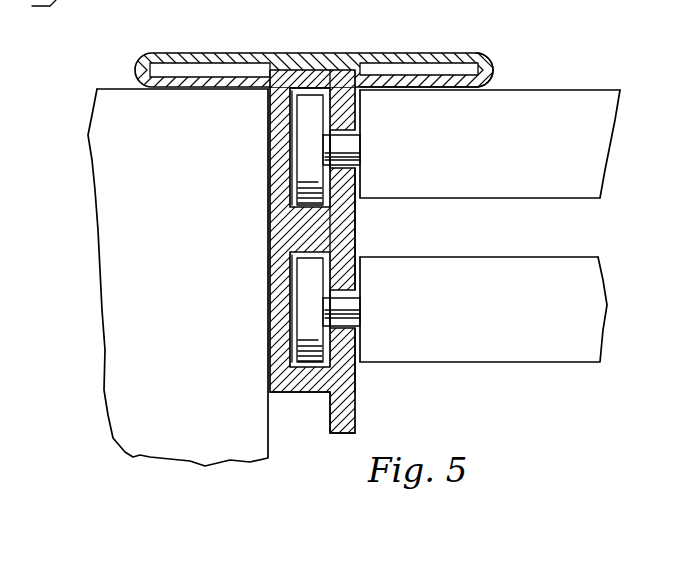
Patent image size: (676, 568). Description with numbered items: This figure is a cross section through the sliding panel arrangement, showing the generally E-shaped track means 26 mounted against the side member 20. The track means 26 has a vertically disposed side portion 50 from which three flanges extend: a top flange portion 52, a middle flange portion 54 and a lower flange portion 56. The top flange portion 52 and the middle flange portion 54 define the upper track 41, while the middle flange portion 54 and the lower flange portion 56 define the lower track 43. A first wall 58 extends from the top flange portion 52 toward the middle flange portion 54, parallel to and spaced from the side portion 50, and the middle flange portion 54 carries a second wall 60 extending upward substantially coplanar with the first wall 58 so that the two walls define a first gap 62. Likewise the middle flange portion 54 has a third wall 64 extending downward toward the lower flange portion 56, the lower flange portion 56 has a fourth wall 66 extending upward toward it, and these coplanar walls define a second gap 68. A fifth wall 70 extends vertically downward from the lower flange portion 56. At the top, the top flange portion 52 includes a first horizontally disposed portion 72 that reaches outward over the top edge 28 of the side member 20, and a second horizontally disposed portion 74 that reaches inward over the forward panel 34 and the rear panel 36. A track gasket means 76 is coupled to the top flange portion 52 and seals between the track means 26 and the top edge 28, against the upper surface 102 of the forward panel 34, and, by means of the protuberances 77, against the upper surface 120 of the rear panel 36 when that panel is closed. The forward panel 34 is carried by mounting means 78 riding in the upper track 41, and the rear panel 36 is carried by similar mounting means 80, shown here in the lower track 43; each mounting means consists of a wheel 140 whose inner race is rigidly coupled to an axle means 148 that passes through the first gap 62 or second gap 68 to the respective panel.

The side member 20 is at (175, 403).
The track means 26 is at (317, 393).
The top edge of the side member 28 is at (114, 88).
The forward panel 34 is at (670, 138).
The rear panel 36 is at (665, 303).
The upper track 41 is at (293, 162).
The lower track 43 is at (293, 313).
The side portion 50 is at (270, 223).
The top flange portion 52 is at (299, 72).
The middle flange portion 54 is at (293, 198).
The lower flange portion 56 is at (293, 358).
The first wall 58 is at (328, 97).
The second wall 60 is at (357, 200).
The first gap 62 is at (357, 165).
The third wall 64 is at (345, 252).
The fourth wall 66 is at (357, 363).
The second gap 68 is at (350, 323).
The fifth wall 70 is at (355, 418).
The first horizontally disposed portion 72 is at (197, 70).
The second horizontally disposed portion 74 is at (440, 67).
The track gasket means 76 is at (495, 72).
The protuberances 77 is at (430, 89).
The mounting means 78 is at (317, 113).
The mounting means 80 is at (317, 256).
The upper surface of the forward panel 102 is at (570, 89).
The upper surface of the rear panel 120 is at (507, 257).
The wheel 140 is at (313, 132).
The axle means 148 is at (352, 137).